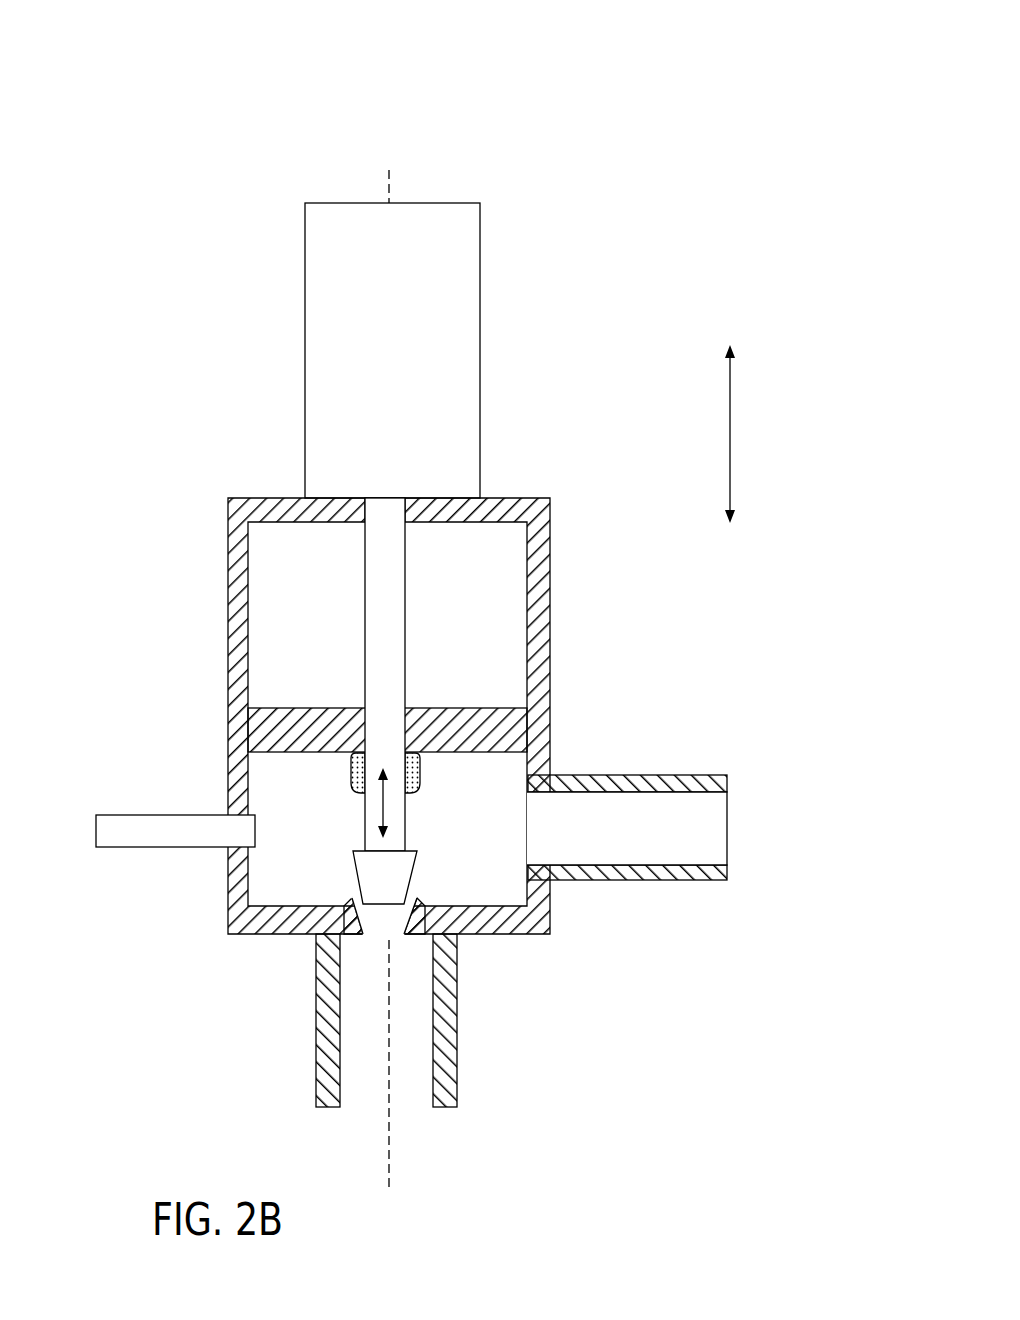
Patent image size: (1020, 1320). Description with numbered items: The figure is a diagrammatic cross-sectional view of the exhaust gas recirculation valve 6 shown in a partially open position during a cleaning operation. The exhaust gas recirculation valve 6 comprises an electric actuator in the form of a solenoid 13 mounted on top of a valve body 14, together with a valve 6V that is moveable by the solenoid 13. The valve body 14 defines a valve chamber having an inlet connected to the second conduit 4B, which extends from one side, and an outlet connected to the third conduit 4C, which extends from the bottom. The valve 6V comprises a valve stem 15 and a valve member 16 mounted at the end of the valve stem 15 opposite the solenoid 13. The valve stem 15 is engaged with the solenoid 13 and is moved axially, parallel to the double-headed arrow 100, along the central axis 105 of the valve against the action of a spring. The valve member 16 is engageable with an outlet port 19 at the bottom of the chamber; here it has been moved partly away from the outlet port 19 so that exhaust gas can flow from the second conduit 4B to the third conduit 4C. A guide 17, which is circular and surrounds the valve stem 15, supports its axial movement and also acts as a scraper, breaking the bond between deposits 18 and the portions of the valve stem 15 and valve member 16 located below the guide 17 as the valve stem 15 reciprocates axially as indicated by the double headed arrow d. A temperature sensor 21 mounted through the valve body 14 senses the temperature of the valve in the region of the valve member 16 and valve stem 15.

The exhaust gas recirculation valve 6 is at (550, 56).
The valve 6V is at (356, 548).
The solenoid 13 is at (305, 308).
The valve body 14 is at (228, 600).
The valve stem 15 is at (405, 605).
The valve member 16 is at (362, 882).
The guide 17 is at (228, 732).
The deposits 18 is at (418, 900).
The outlet port 19 is at (383, 935).
The temperature sensor 21 is at (150, 815).
The second conduit 4B is at (628, 872).
The third conduit 4C is at (457, 1005).
The double-headed arrow 100 is at (730, 452).
The central axis 105 is at (389, 1160).
The double headed arrow d is at (383, 815).